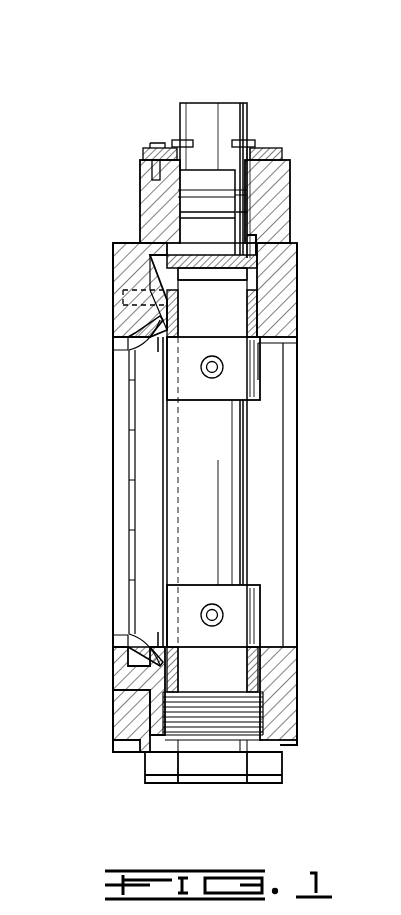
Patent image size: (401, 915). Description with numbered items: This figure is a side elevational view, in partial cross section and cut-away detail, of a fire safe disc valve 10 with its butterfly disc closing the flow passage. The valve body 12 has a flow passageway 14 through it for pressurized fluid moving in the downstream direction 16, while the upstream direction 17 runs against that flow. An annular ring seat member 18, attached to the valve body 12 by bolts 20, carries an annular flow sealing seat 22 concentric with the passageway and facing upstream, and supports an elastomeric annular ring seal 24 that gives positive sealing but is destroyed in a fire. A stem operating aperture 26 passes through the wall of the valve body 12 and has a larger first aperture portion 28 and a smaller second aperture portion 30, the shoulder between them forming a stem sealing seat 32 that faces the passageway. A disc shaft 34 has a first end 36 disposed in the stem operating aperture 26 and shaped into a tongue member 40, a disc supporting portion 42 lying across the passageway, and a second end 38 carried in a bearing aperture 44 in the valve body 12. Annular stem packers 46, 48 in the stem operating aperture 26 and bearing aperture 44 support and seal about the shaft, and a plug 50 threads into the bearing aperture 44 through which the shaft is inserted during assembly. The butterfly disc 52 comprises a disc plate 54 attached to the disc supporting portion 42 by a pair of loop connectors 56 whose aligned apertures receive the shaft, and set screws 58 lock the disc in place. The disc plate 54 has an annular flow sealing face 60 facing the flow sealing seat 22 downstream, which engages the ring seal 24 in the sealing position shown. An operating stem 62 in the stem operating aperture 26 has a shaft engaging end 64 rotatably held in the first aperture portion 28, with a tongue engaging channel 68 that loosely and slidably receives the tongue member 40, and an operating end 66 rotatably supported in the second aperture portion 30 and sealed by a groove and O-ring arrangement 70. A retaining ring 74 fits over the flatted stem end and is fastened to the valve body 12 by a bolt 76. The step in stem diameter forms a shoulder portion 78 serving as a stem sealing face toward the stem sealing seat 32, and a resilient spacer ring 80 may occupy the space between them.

The fire safe disc valve 10 is at (135, 82).
The valve body 12 is at (140, 185).
The flow passageway 14 is at (300, 368).
The downstream direction 16 is at (260, 490).
The upstream direction 17 is at (258, 462).
The annular ring seat member 18 is at (115, 283).
The bolts 20 is at (120, 298).
The annular flow sealing seat 22 is at (128, 345).
The annular ring seal 24 is at (140, 330).
The stem operating aperture 26 is at (262, 313).
The first aperture portion 28 is at (260, 317).
The second aperture portion 30 is at (290, 172).
The stem sealing seat 32 is at (182, 250).
The disc shaft 34 is at (222, 447).
The first end 36 is at (212, 302).
The second end 38 is at (212, 669).
The tongue member 40 is at (260, 262).
The disc supporting portion 42 is at (235, 529).
The bearing aperture 44 is at (272, 669).
The annular stem packer 46 is at (262, 353).
The annular stem packer 48 is at (258, 650).
The plug 50 is at (262, 775).
The butterfly disc 52 is at (142, 458).
The disc plate 54 is at (142, 418).
The loop connectors 56 is at (262, 385).
The set screws 58 is at (212, 378).
The annular flow sealing face 60 is at (150, 345).
The operating stem 62 is at (200, 105).
The shaft engaging end 64 is at (250, 262).
The operating end 66 is at (224, 120).
The tongue engaging channel 68 is at (245, 282).
The groove and O-ring arrangement 70 is at (258, 215).
The retaining ring 74 is at (268, 148).
The bolt 76 is at (158, 147).
The shoulder portion 78 is at (252, 140).
The spacer ring 80 is at (258, 250).